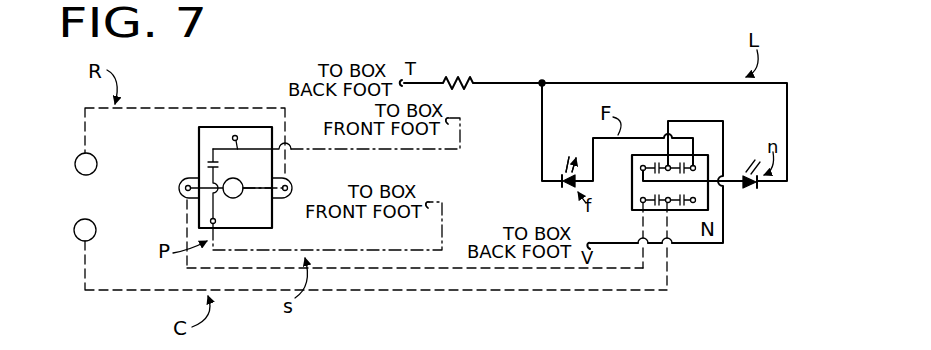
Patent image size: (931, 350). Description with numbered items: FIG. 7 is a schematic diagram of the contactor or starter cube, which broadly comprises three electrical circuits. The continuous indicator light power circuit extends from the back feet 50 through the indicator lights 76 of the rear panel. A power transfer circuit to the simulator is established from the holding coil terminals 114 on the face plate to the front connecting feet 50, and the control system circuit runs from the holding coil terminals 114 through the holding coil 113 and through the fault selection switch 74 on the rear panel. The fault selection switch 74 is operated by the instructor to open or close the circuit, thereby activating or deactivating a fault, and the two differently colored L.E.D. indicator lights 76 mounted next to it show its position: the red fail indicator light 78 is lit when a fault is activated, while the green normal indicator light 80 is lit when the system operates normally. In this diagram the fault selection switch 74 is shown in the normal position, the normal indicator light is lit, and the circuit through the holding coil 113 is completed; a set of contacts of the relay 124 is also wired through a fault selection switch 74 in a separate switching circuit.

The feet 50 is at (452, 112).
The fault selection switch 74 is at (704, 165).
The indicator lights 76 is at (553, 168).
The red fail indicator light 78 is at (570, 191).
The green normal indicator light 80 is at (757, 193).
The holding coil 113 is at (194, 176).
The holding coil terminals 114 is at (76, 163).
The relay 124 is at (245, 134).